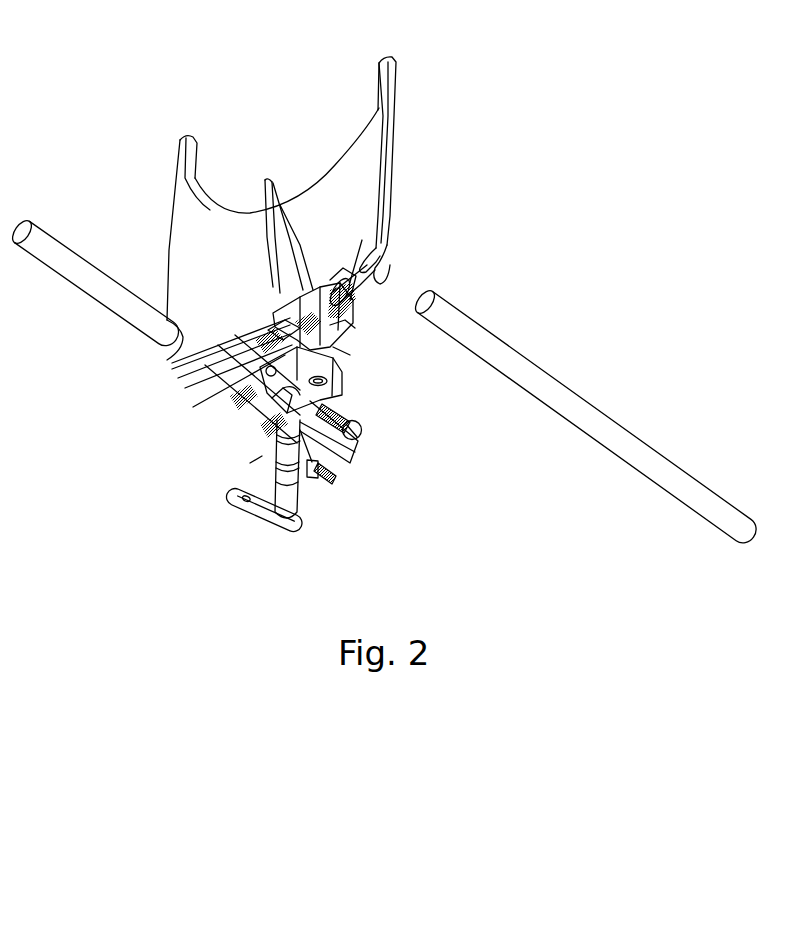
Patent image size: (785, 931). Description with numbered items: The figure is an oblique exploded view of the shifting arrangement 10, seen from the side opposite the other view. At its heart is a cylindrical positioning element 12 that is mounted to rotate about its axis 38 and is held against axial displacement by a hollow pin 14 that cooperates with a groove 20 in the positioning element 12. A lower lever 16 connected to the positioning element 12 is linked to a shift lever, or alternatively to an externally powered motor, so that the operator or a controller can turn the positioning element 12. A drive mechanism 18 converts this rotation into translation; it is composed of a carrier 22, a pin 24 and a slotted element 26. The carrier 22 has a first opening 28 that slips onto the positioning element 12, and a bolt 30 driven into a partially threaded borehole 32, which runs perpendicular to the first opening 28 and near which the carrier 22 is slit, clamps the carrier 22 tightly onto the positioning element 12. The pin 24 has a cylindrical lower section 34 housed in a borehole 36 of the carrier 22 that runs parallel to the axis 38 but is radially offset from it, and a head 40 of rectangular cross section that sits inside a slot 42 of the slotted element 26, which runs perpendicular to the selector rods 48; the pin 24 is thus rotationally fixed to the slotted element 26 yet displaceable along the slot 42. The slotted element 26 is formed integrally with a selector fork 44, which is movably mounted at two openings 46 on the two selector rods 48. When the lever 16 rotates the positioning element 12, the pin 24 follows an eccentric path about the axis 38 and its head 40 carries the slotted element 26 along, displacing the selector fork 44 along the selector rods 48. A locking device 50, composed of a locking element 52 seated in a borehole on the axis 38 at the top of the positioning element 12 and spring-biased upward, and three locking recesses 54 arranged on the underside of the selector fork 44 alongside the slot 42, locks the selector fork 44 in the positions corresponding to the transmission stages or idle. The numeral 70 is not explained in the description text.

The shifting arrangement 10 is at (472, 506).
The positioning element 12 is at (250, 463).
The hollow pin 14 is at (332, 480).
The lower lever 16 is at (263, 513).
The drive mechanism 18 is at (243, 385).
The groove 20 is at (308, 465).
The carrier 22 is at (336, 376).
The pin 24 is at (333, 340).
The slotted element 26 is at (343, 310).
The first opening 28 is at (258, 428).
The bolt 30 is at (346, 397).
The borehole 32 is at (222, 383).
The cylindrical lower section 34 is at (333, 347).
The borehole 36 is at (340, 385).
The axis 38 is at (267, 330).
The head 40 is at (337, 330).
The slot 42 is at (380, 223).
The selector fork 44 is at (372, 169).
The openings 46 is at (168, 352).
The selector rods 48 is at (73, 272).
The locking device 50 is at (197, 370).
The locking element 52 is at (356, 438).
The locking recesses 54 is at (285, 222).
The cradle arm 70 is at (373, 107).